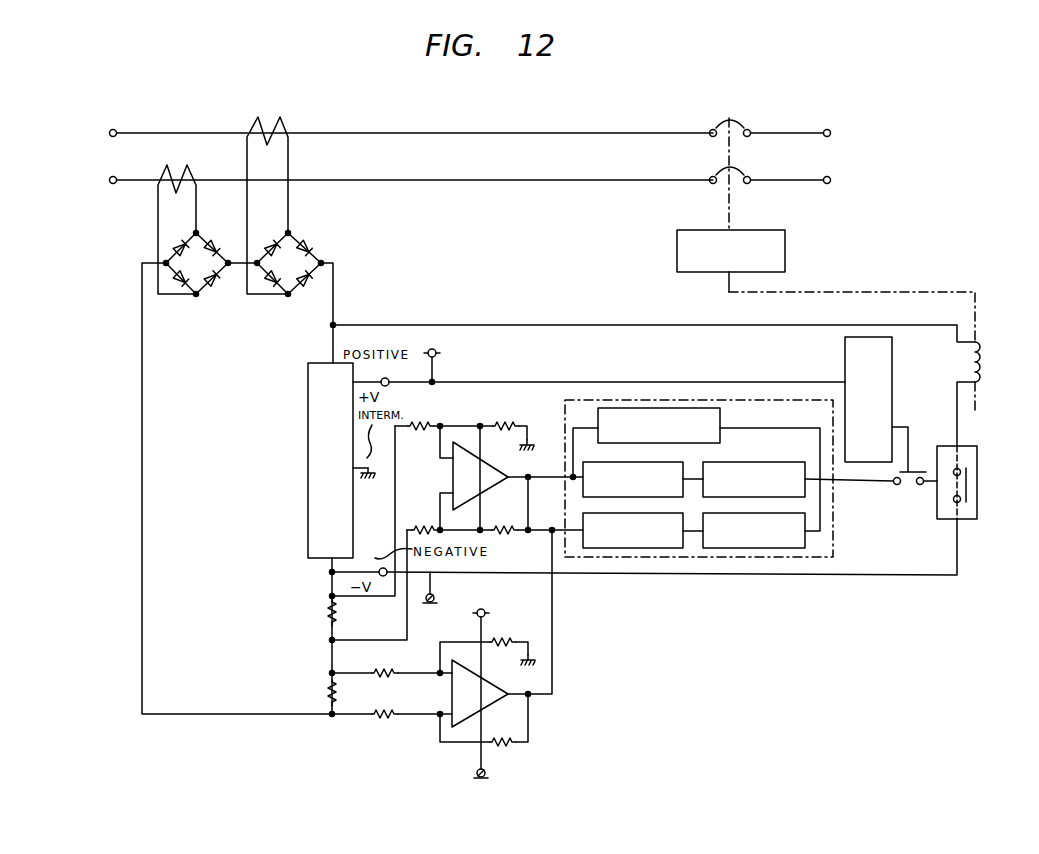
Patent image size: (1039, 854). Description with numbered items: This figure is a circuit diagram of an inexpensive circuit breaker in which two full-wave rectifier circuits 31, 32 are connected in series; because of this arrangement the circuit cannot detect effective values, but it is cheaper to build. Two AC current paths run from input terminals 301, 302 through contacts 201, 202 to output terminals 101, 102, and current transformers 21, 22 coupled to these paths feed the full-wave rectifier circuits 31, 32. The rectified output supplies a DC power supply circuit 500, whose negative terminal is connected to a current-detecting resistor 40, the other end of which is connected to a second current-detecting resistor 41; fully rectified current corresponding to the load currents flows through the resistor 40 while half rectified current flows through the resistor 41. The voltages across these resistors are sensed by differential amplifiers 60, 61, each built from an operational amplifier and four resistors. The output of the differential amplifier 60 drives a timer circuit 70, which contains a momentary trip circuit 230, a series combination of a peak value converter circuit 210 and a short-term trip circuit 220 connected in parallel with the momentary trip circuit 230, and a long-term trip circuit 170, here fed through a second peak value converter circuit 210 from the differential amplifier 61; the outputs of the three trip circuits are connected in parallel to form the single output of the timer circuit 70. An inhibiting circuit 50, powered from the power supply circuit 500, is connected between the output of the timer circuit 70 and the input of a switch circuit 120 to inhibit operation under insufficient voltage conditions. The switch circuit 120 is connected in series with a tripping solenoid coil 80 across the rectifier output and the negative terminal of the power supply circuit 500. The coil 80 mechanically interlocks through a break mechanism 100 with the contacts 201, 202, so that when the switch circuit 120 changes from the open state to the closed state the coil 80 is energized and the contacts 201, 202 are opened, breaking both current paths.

The power source side terminal 301 is at (108, 133).
The power source side terminal 302 is at (108, 180).
The load side terminal 101 is at (831, 133).
The load side terminal 102 is at (831, 180).
The contact 201 is at (709, 130).
The contact 202 is at (711, 177).
The current transformer 21 is at (290, 126).
The current transformer 22 is at (188, 172).
The full-wave rectifier circuit 31 is at (291, 250).
The full-wave rectifier circuit 32 is at (196, 272).
The break mechanism 100 is at (785, 242).
The DC power supply circuit 500 is at (308, 395).
The differential amplifier 60 is at (470, 440).
The differential amplifier 61 is at (505, 708).
The current-detecting resistor 40 is at (328, 618).
The current-detecting resistor 41 is at (328, 692).
The timer circuit 70 is at (585, 400).
The peak value converter circuit 210 is at (595, 460).
The momentary trip circuit 230 is at (702, 408).
The short-term trip circuit 220 is at (807, 485).
The long-term trip circuit 170 is at (788, 550).
The inhibiting circuit 50 is at (893, 355).
The switch circuit 120 is at (977, 463).
The tripping solenoid coil 80 is at (981, 361).